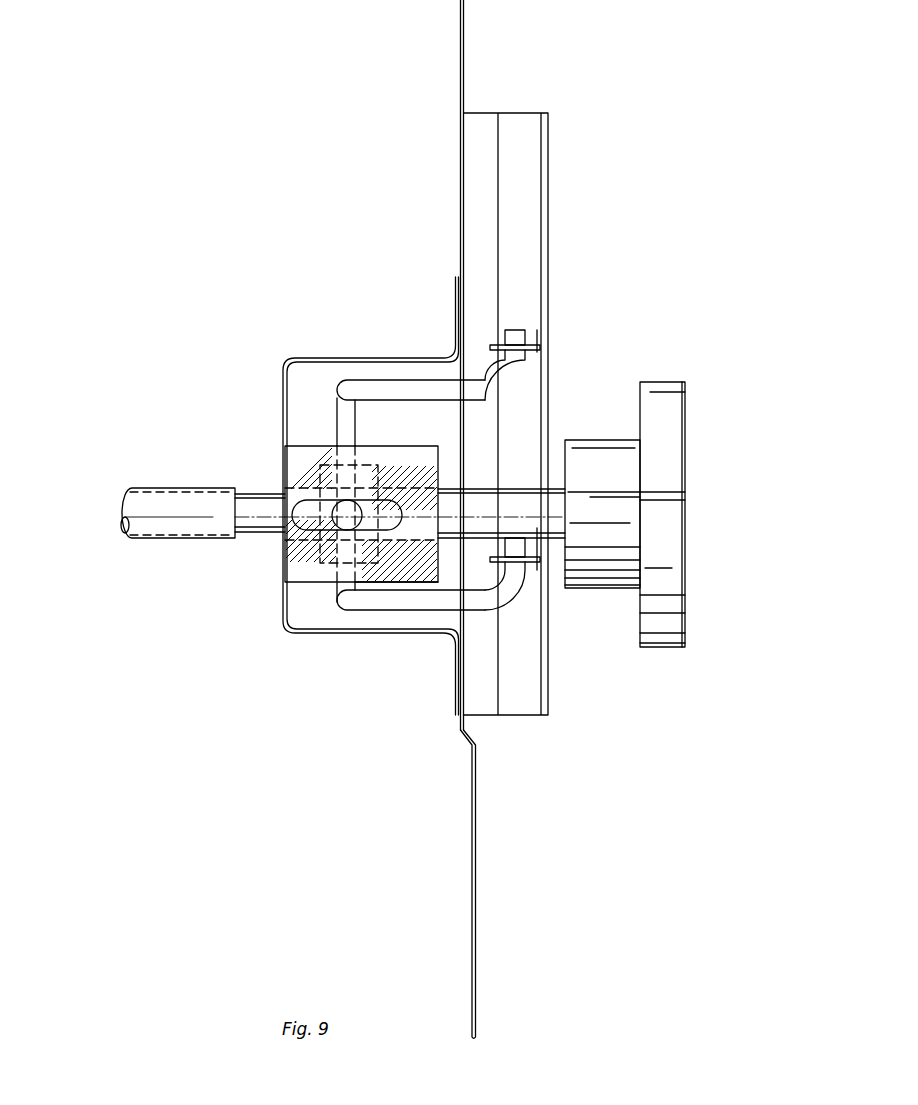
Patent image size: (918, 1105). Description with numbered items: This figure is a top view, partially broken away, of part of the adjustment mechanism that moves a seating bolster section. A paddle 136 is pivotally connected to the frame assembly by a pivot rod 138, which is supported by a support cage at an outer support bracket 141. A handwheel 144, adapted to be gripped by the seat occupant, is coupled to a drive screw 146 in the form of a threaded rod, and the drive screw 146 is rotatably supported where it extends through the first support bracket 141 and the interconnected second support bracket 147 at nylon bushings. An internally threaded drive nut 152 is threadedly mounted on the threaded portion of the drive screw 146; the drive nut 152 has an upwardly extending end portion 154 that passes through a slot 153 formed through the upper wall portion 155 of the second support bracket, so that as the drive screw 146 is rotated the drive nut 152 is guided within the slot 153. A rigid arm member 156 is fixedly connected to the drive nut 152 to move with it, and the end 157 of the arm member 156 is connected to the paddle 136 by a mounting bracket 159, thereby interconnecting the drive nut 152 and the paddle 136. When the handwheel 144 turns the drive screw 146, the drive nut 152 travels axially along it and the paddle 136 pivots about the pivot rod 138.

The paddle 136 is at (548, 227).
The pivot rod 138 is at (488, 122).
The outer support bracket 141 is at (478, 762).
The handwheel 144 is at (662, 382).
The drive screw 146 is at (250, 548).
The second support bracket 147 is at (312, 636).
The drive nut 152 is at (124, 518).
The slot 153 is at (341, 500).
The end portion 154 is at (366, 496).
The upper wall portion 155 is at (377, 584).
The arm member 156 is at (409, 378).
The end of arm member 157 is at (494, 588).
The mounting bracket 159 is at (528, 572).